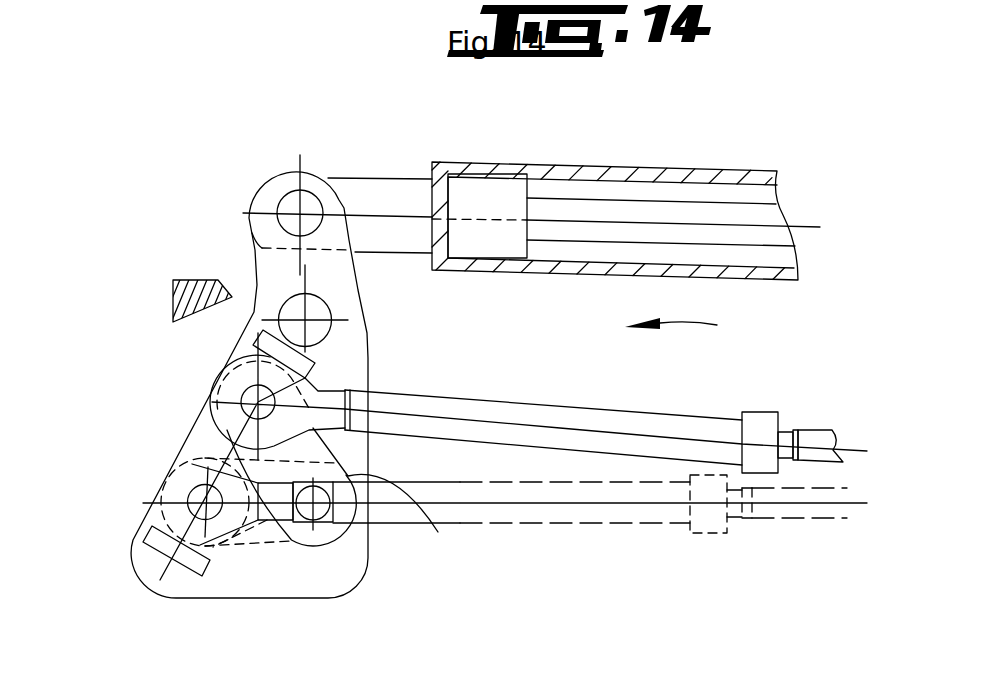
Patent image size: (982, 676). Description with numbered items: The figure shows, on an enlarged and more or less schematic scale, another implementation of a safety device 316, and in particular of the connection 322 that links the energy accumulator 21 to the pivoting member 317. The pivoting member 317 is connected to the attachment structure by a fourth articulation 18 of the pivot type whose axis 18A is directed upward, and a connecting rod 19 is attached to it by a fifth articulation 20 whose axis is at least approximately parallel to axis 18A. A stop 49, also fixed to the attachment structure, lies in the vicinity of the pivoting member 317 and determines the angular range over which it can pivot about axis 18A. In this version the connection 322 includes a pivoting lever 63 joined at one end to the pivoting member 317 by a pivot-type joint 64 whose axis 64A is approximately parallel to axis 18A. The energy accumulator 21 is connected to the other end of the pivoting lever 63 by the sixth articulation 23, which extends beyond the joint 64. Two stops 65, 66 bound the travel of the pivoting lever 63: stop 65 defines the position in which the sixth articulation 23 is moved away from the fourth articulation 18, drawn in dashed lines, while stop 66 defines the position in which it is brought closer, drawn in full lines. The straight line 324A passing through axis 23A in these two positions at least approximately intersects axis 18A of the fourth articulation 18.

The fourth articulation 18 is at (272, 285).
The axis of the fourth articulation 18A is at (310, 322).
The connecting rod 19 is at (565, 165).
The fifth articulation 20 is at (270, 185).
The energy accumulator 21 is at (700, 417).
The sixth articulation 23 is at (224, 386).
The axis of the sixth articulation 23A is at (316, 364).
The stop 49 is at (173, 306).
The pivoting lever 63 is at (320, 532).
The joint 64 is at (350, 528).
The axis of the joint 64A is at (350, 523).
The stop 65 is at (160, 546).
The stop 66 is at (242, 330).
The safety device 316 is at (706, 329).
The pivoting member 317 is at (362, 270).
The connection 322 is at (178, 447).
The straight line 324A is at (168, 570).